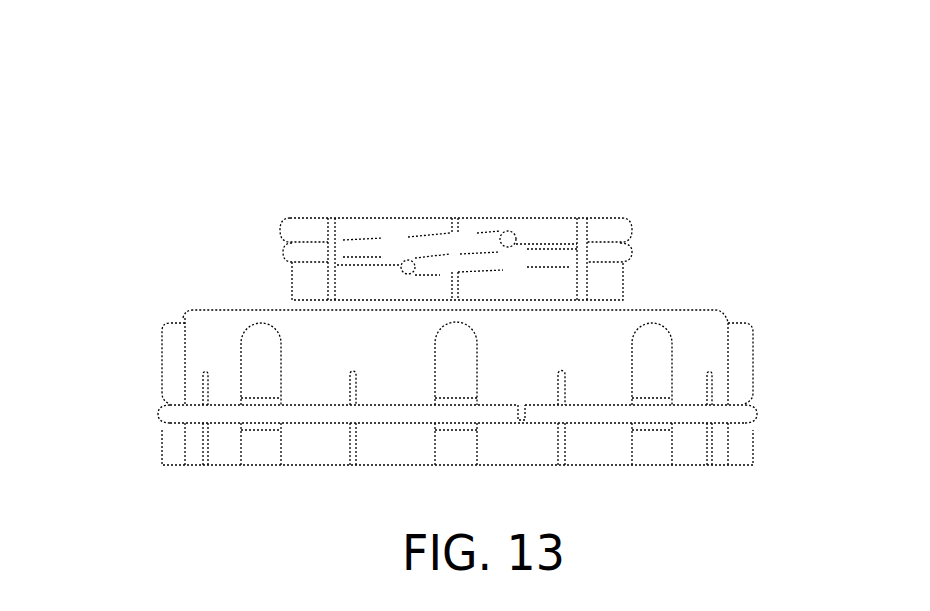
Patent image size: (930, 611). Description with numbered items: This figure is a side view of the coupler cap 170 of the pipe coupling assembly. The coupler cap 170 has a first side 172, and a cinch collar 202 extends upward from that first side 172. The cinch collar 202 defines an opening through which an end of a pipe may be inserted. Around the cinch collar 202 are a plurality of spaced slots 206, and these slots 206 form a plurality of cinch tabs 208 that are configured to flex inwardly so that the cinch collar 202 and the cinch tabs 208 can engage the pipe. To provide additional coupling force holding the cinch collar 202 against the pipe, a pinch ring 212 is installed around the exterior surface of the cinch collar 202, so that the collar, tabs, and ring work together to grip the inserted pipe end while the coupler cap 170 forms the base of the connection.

The coupler cap 170 is at (702, 310).
The first side 172 is at (215, 310).
The cinch collar 202 is at (292, 275).
The spaced slots 206 is at (325, 217).
The cinch tabs 208 is at (528, 217).
The pinch ring 212 is at (365, 217).